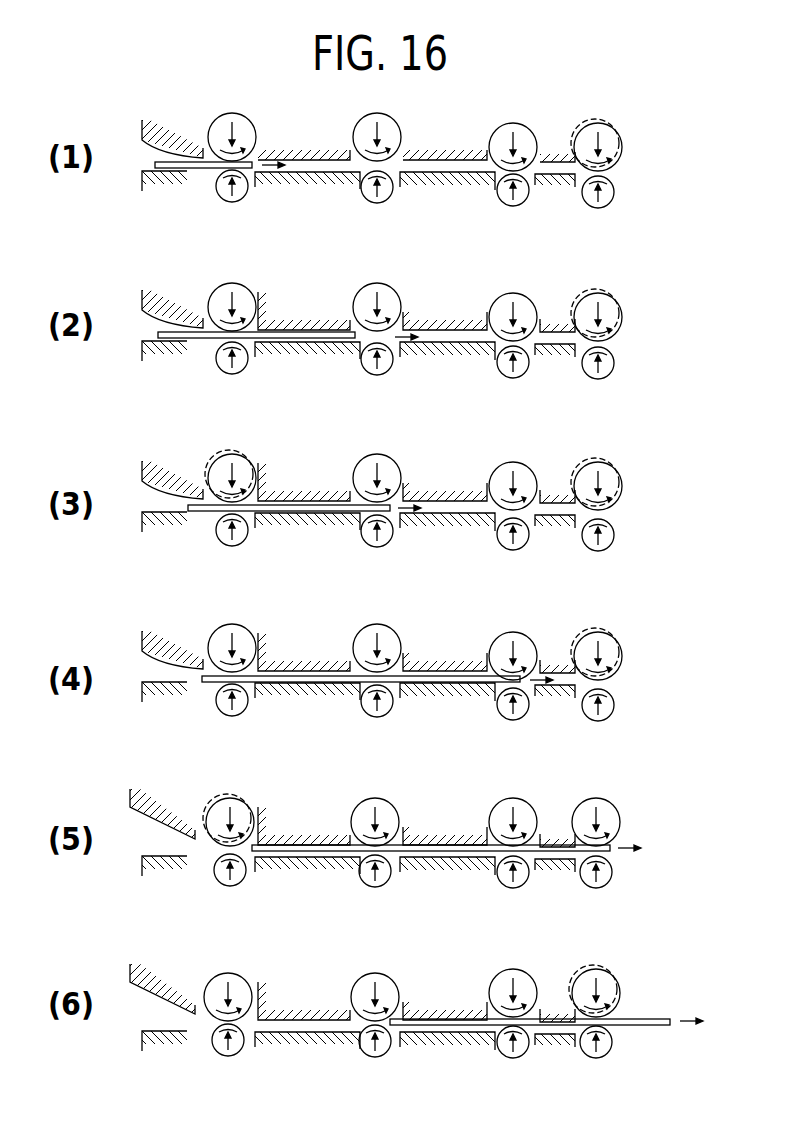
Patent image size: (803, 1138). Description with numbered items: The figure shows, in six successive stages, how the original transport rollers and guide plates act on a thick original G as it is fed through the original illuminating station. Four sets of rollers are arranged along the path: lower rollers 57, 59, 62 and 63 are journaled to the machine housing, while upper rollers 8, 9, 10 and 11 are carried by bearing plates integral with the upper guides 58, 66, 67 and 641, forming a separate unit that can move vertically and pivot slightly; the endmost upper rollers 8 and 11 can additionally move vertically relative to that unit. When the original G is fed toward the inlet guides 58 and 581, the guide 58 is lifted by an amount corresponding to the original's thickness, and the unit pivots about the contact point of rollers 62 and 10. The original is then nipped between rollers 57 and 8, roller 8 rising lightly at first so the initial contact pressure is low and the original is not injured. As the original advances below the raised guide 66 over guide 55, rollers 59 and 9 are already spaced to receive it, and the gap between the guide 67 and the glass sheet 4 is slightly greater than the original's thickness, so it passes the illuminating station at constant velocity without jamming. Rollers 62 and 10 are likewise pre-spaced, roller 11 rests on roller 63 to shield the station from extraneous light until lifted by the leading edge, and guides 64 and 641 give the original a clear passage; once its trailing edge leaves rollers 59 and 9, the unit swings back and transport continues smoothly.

The glass sheet 4 is at (450, 178).
The upper roller 8 is at (250, 124).
The upper roller 9 is at (393, 120).
The upper roller 10 is at (510, 124).
The upper roller 11 is at (606, 128).
The lower guide plate 55 is at (305, 182).
The lower roller 57 is at (218, 192).
The upper guide 58 is at (178, 143).
The guide 581 is at (153, 178).
The lower roller 59 is at (362, 192).
The lower roller 62 is at (500, 198).
The lower roller 63 is at (611, 200).
The guide 64 is at (553, 190).
The upper guide 641 is at (555, 156).
The upper guide 66 is at (306, 150).
The upper guide 67 is at (450, 152).
The original G is at (252, 170).